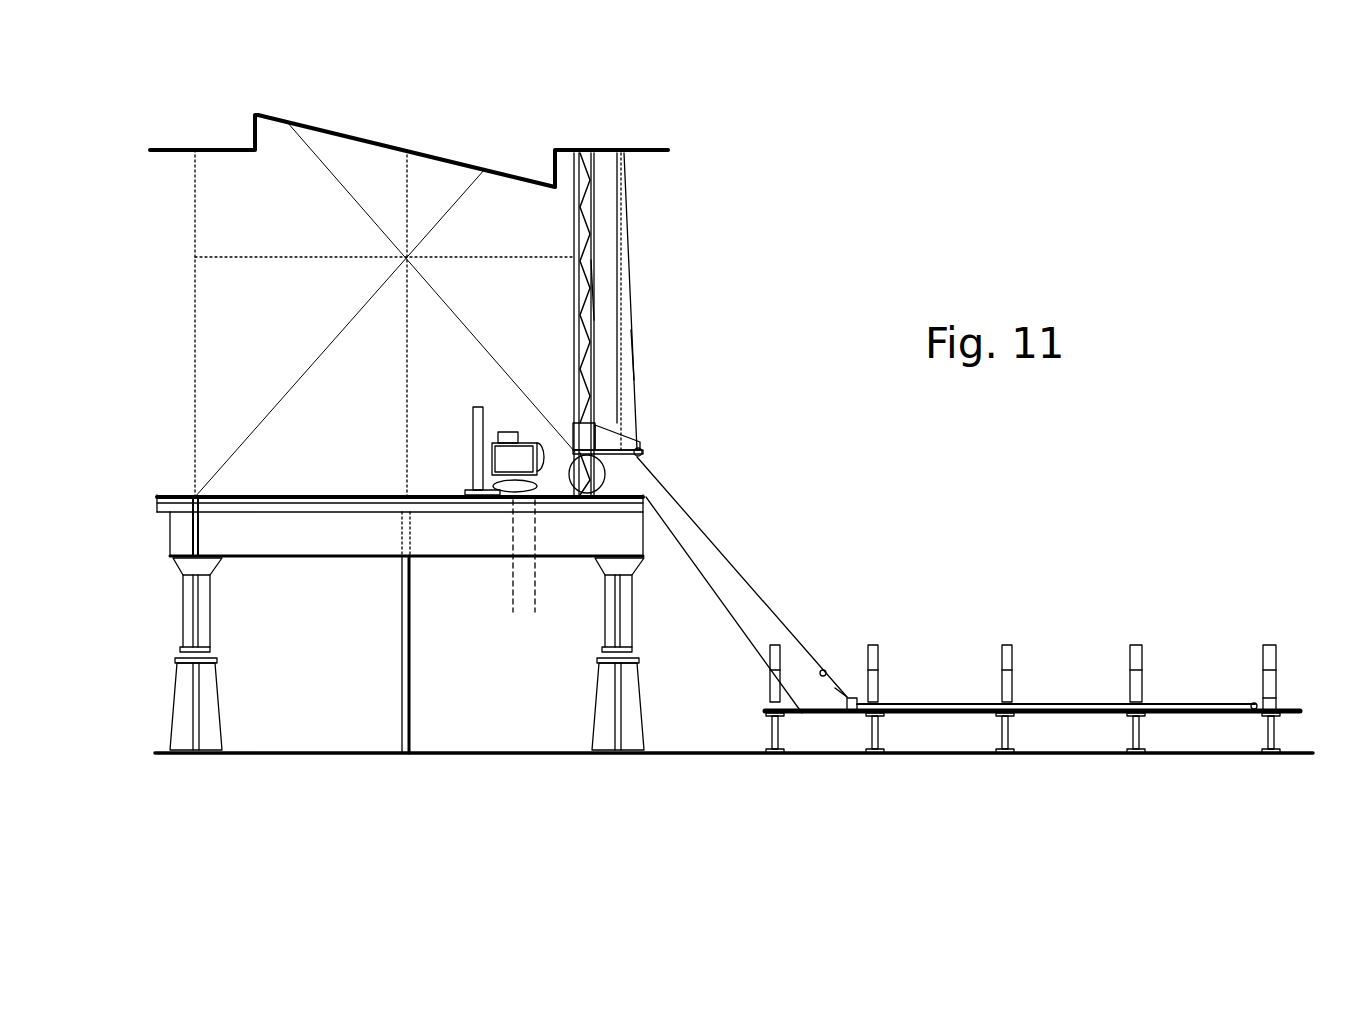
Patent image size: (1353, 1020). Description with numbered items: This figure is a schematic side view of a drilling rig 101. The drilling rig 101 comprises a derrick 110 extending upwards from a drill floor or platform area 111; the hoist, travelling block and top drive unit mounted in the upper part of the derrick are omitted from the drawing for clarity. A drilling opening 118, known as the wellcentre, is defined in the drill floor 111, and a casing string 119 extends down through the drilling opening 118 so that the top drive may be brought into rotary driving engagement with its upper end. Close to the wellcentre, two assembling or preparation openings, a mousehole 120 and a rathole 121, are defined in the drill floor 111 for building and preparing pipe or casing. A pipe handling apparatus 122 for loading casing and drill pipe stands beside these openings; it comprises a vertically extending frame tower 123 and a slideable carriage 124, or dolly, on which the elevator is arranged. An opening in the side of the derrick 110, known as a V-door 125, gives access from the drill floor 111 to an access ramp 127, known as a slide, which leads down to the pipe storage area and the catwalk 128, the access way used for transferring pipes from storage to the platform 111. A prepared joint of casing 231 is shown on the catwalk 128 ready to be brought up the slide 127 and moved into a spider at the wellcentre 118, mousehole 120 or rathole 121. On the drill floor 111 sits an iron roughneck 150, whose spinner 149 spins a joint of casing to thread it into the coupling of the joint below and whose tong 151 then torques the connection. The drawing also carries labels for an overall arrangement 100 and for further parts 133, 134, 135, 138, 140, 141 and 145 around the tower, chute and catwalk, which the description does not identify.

The material handling system 100 is at (148, 529).
The drilling rig 101 is at (393, 362).
The derrick 110 is at (195, 390).
The drill floor 111 is at (307, 502).
The drilling opening 118 is at (407, 493).
The casing string 119 is at (402, 660).
The mousehole 120 is at (512, 500).
The rathole 121 is at (543, 500).
The pipe handling apparatus 122 is at (575, 247).
The frame tower 123 is at (596, 290).
The slideable carriage 124 is at (542, 452).
The V-door 125 is at (620, 243).
The access ramp 127 is at (718, 592).
The catwalk 128 is at (982, 717).
The spout 133 is at (636, 433).
The wheel 134 is at (600, 493).
The chute outlet 135 is at (832, 688).
The pivot 138 is at (823, 670).
The pipe section 140 is at (635, 350).
The outlet plate 141 is at (645, 445).
The cart stop 145 is at (855, 678).
The spinner 149 is at (540, 445).
The iron roughneck 150 is at (482, 437).
The tong 151 is at (523, 430).
The prepared joint of casing 231 is at (945, 690).